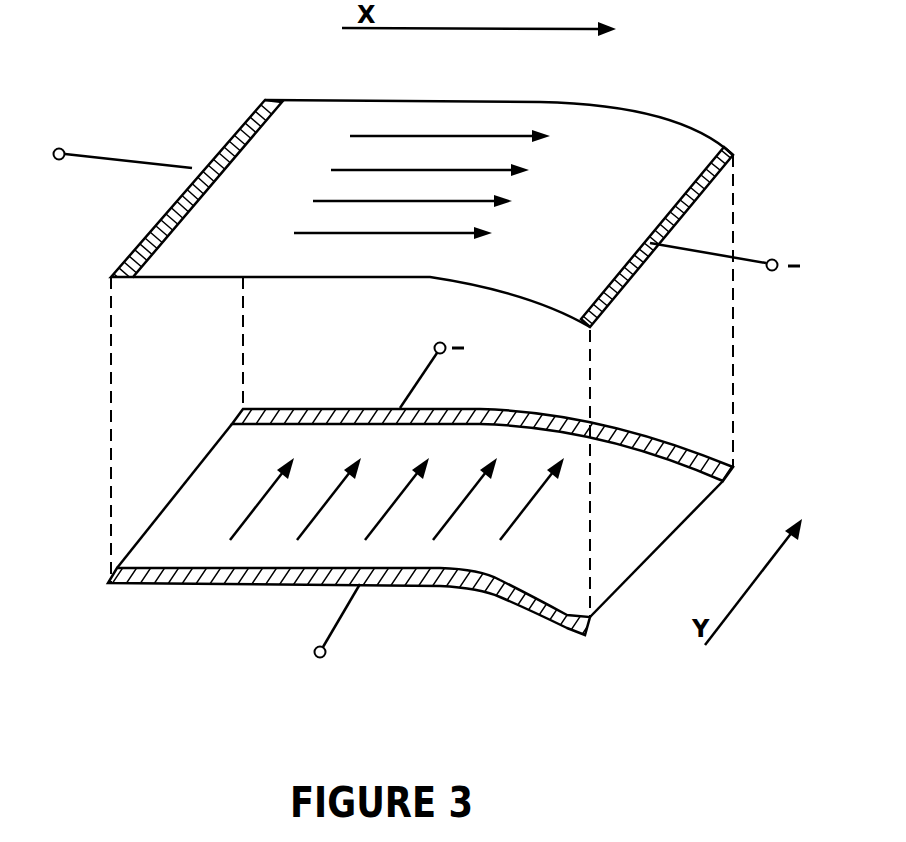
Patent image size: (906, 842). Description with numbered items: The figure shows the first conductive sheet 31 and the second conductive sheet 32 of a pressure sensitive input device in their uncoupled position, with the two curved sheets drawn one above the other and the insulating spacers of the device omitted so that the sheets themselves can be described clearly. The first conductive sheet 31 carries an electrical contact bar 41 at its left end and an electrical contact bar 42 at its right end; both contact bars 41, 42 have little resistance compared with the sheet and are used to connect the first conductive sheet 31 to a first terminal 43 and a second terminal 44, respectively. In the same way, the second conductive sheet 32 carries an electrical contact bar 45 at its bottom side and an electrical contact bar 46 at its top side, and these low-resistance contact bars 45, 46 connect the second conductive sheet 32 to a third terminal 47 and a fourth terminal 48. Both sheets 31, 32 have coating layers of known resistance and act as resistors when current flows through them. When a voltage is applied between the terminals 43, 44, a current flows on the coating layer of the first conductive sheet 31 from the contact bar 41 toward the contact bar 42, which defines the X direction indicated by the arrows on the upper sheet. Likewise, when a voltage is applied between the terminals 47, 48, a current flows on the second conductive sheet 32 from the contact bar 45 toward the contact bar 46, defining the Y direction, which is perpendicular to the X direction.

The first conductive sheet 31 is at (538, 102).
The second conductive sheet 32 is at (665, 537).
The electrical contact bar 41 is at (207, 148).
The electrical contact bar 42 is at (627, 277).
The first terminal 43 is at (64, 152).
The second terminal 44 is at (775, 260).
The electrical contact bar 45 is at (210, 584).
The electrical contact bar 46 is at (306, 410).
The third terminal 47 is at (315, 656).
The fourth terminal 48 is at (438, 343).